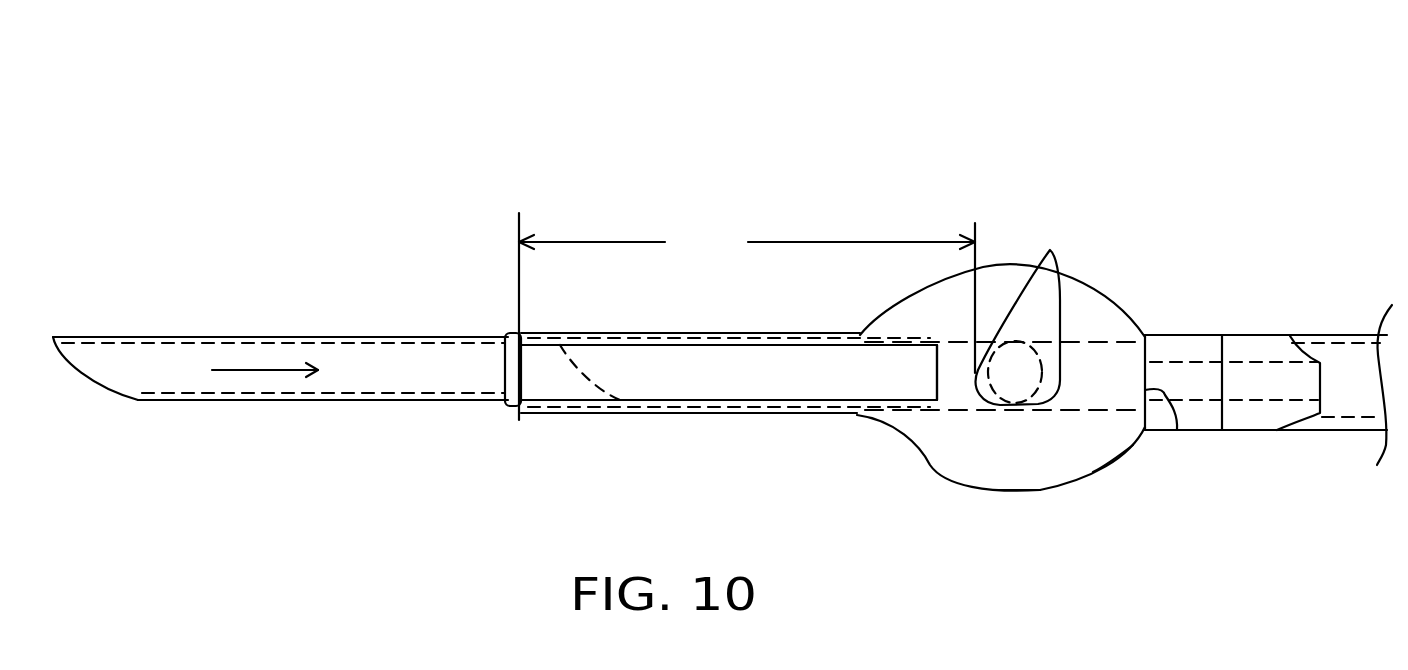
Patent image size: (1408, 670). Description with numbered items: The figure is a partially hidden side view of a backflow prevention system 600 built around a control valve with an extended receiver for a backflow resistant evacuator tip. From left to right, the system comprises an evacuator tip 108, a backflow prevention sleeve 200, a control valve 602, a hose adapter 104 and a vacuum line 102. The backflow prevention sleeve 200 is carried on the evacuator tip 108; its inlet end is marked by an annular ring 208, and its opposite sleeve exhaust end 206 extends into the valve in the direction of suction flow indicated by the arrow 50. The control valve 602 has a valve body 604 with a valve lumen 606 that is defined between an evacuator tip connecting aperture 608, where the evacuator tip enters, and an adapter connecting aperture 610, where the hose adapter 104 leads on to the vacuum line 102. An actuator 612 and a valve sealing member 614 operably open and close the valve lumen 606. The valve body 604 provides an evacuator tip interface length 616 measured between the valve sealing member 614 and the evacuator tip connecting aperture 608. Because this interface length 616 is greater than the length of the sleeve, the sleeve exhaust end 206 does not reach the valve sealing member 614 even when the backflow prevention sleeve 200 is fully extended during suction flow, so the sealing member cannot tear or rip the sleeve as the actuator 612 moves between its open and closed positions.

The direction of advancement 50 is at (265, 362).
The vacuum line 102 is at (1303, 432).
The hose adapter 104 is at (1183, 335).
The evacuator tip 108 is at (223, 403).
The backflow prevention sleeve 200 is at (710, 410).
The sleeve exhaust end 206 is at (937, 362).
The annular ring 208 is at (510, 407).
The backflow prevention system 600 is at (882, 197).
The control valve 602 is at (1000, 490).
The valve body 604 is at (1093, 472).
The valve lumen 606 is at (957, 387).
The evacuator tip connecting aperture 608 is at (520, 363).
The adapter connecting aperture 610 is at (1177, 430).
The actuator 612 is at (1060, 275).
The valve sealing member 614 is at (1020, 392).
The evacuator tip interface length 616 is at (747, 316).